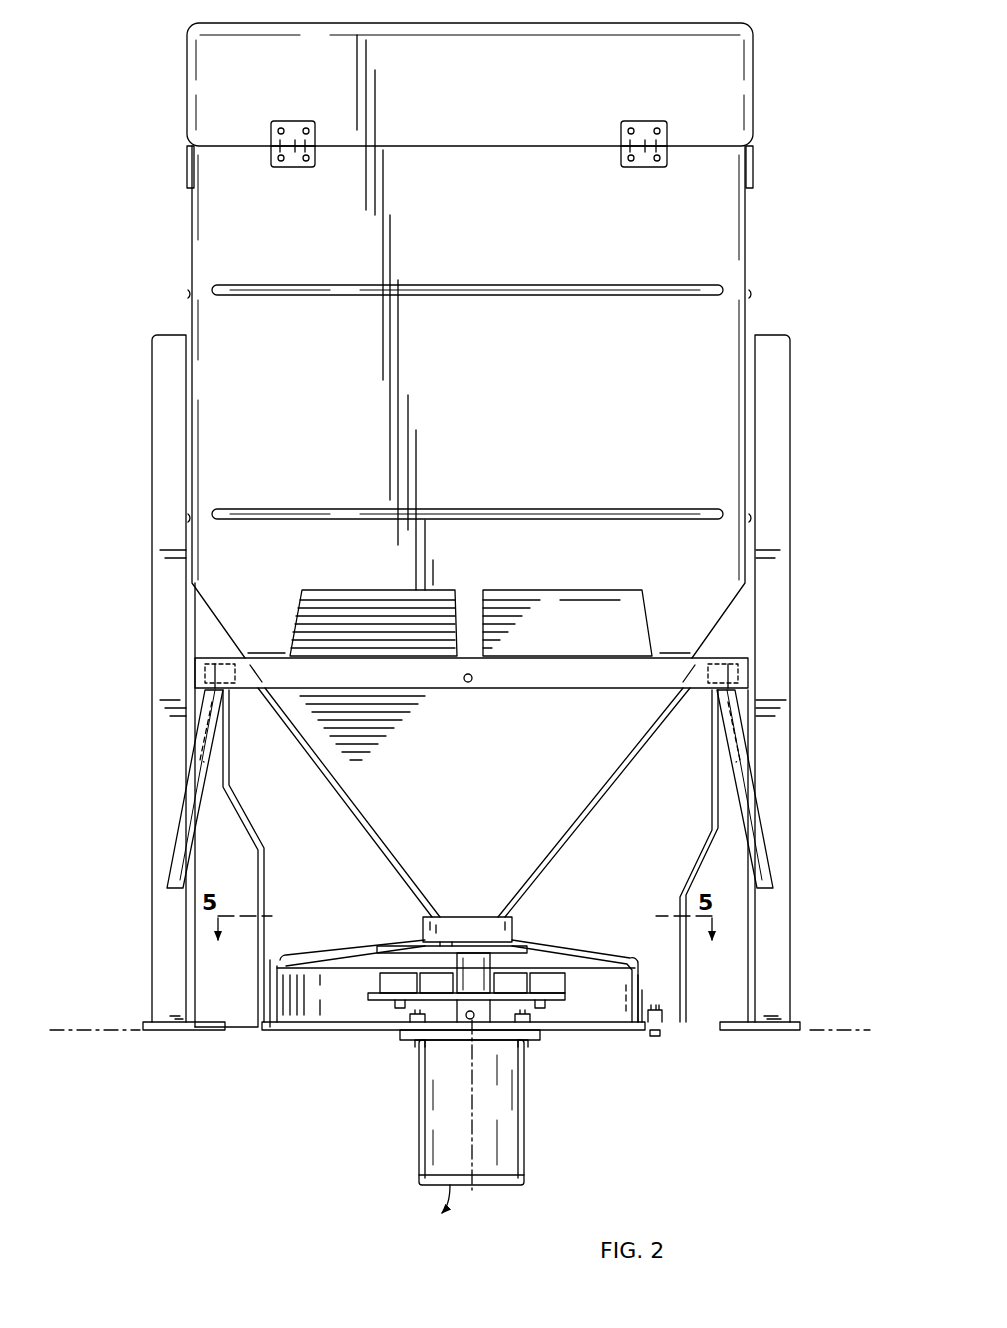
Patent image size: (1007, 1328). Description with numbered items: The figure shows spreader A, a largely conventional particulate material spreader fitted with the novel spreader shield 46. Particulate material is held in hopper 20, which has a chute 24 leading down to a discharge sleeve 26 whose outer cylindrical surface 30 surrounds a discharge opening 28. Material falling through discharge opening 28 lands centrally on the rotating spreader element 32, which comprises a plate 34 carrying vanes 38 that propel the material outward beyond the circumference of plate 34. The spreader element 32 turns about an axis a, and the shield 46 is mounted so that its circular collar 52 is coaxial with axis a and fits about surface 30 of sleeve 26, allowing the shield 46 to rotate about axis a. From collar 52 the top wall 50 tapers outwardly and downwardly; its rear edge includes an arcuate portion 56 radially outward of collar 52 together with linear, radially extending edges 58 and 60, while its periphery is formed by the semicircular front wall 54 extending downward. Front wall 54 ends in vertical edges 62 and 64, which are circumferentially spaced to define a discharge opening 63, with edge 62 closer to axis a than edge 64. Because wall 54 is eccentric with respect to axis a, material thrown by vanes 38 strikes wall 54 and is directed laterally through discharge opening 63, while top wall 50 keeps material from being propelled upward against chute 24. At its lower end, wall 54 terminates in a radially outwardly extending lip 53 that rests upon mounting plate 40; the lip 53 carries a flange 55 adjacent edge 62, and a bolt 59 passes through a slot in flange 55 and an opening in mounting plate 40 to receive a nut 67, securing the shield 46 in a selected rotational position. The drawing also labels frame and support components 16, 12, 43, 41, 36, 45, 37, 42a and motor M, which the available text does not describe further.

The spreader A is at (118, 74).
The hopper 20 is at (184, 235).
The chute 24 is at (618, 765).
The support frame 16 is at (795, 700).
The ground surface 12 is at (70, 1028).
The left brace 43 is at (255, 875).
The right brace 41 is at (718, 822).
The spreader shield 46 is at (298, 950).
The circular collar 52 is at (492, 932).
The linear radially extending edge 60 is at (330, 952).
The linear radially extending edge 58 is at (597, 953).
The semicircular front wall 54 is at (643, 978).
The vertical edge 62 is at (640, 990).
The vertical edge 64 is at (270, 997).
The discharge opening 63 is at (540, 960).
The top wall 50 is at (393, 945).
The arcuate portion 56 is at (452, 946).
The hub 42a is at (472, 966).
The vanes 38 is at (388, 977).
The discharge sleeve 26 is at (500, 951).
The outer cylindrical surface 30 is at (432, 955).
The discharge opening 28 is at (502, 955).
The lip 53 is at (268, 1030).
The mounting plate 40 is at (376, 1030).
The bolt 36 is at (463, 1022).
The fastener 45 is at (481, 1022).
The motor shaft 37 is at (485, 1060).
The motor M is at (488, 1160).
The axis a is at (470, 1132).
The bolt 59 is at (656, 1012).
The flange 55 is at (680, 1027).
The nut 67 is at (658, 1034).
The plate 34 is at (573, 1030).
The spreader element 32 is at (556, 1008).